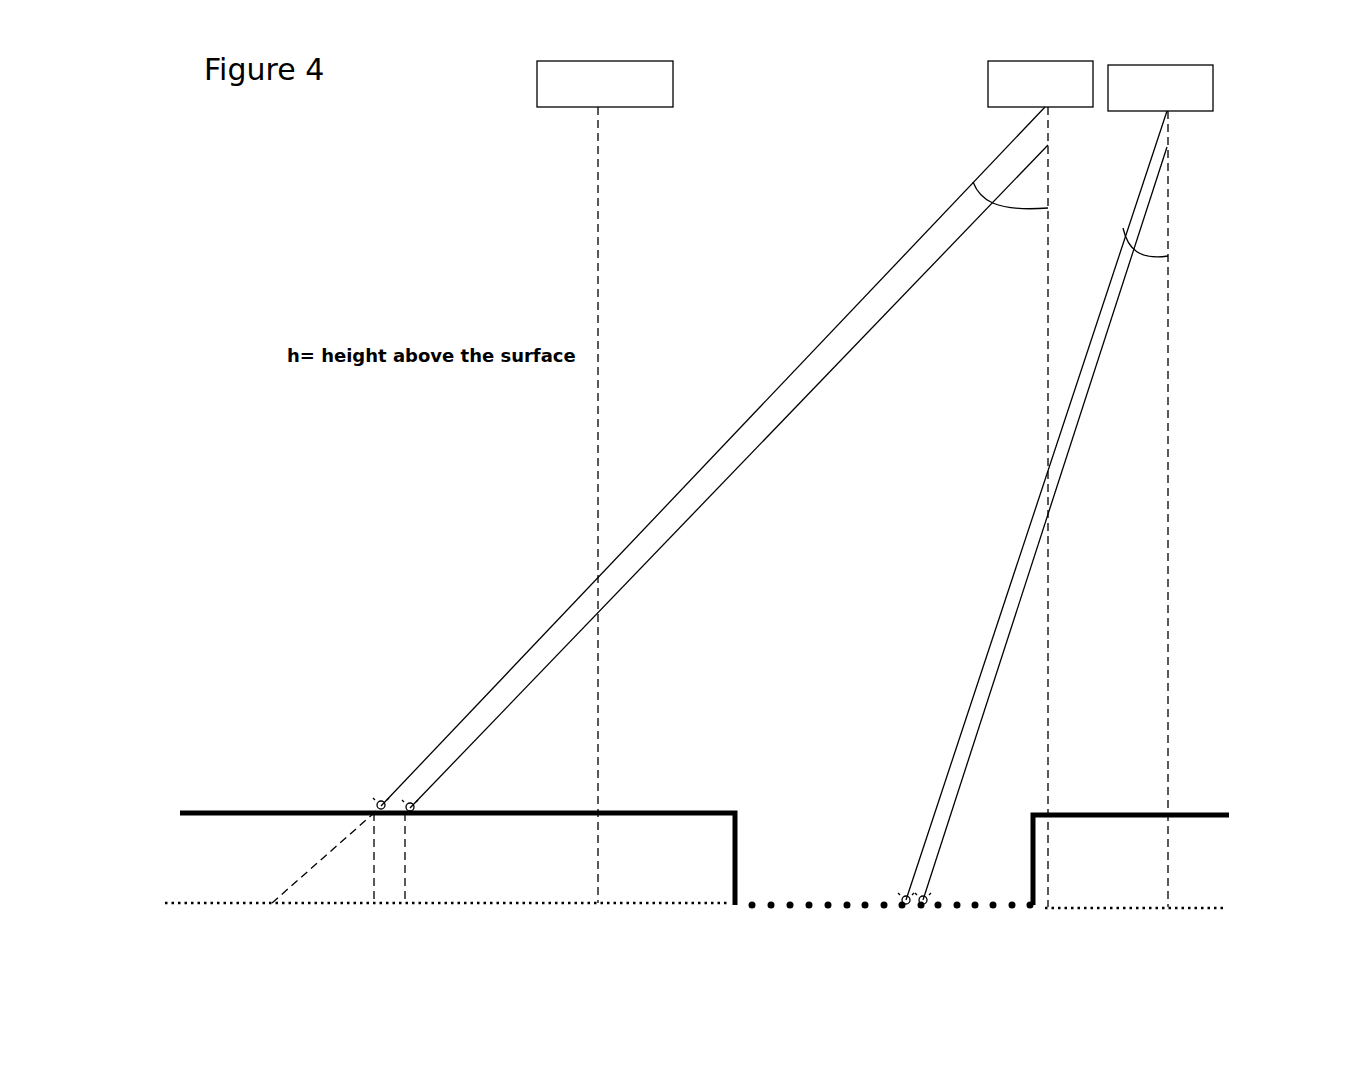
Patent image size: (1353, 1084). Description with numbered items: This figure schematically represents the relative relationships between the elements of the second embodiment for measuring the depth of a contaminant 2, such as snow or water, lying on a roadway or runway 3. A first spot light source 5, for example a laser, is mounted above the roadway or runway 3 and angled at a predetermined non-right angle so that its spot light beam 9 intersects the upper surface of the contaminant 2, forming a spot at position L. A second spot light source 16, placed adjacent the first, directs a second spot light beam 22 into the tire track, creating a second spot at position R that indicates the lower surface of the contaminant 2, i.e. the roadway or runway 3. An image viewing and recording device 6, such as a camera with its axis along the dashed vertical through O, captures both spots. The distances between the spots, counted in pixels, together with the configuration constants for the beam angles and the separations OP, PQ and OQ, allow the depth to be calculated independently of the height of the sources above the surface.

The contaminant 2 is at (206, 867).
The roadway or runway 3 is at (194, 957).
The spot light source 5 is at (988, 82).
The image viewing and recording device 6 is at (537, 82).
The spot light beam 9 is at (813, 348).
The second spot light source 16 is at (1215, 93).
The second spot light beam 22 is at (1005, 577).